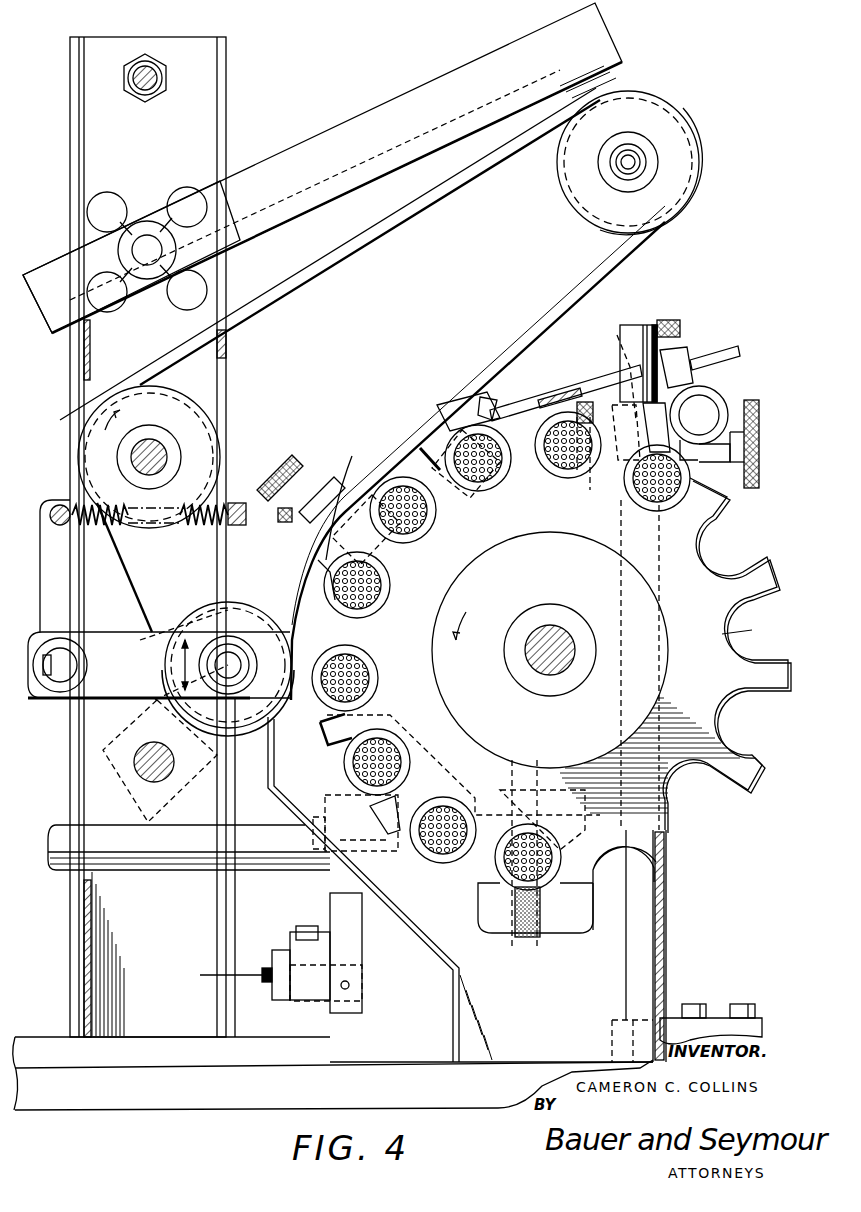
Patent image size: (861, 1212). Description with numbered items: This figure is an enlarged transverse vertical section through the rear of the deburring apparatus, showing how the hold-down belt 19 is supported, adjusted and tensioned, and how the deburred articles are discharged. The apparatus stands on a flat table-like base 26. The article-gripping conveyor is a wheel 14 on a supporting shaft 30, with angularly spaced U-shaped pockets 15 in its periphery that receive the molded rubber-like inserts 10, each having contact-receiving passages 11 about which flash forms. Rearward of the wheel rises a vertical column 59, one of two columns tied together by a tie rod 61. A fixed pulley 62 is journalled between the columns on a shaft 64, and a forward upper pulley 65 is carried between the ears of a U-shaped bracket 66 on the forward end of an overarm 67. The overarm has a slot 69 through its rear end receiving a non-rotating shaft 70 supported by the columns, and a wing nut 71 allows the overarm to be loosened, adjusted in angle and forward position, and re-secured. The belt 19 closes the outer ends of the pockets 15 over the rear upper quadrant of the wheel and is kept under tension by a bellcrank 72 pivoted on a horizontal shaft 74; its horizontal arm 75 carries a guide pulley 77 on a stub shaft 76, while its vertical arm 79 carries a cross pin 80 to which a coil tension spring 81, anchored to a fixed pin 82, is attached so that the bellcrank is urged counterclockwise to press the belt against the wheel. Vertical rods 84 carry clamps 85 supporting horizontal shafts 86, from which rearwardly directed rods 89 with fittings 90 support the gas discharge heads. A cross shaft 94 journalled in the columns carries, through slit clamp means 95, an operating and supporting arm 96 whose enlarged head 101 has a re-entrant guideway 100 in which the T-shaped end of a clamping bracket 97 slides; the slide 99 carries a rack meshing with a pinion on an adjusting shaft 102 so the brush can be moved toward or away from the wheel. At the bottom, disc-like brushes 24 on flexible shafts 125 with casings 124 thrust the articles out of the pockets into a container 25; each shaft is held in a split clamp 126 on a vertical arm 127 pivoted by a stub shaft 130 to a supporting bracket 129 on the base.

The insert 10 is at (494, 410).
The contact-receiving passages 11 is at (372, 678).
The wheel 14 is at (752, 790).
The notches or pockets 15 is at (730, 632).
The hold-down belt 19 is at (558, 320).
The disc-like brushes 24 is at (540, 920).
The container 25 is at (643, 968).
The base 26 is at (480, 1062).
The shaft 30 is at (556, 635).
The vertical column 59 is at (212, 102).
The tie rod 61 is at (140, 68).
The fixed pulley 62 is at (190, 412).
The shaft 64 is at (170, 450).
The forward upper hold-down belt pulley 65 is at (690, 118).
The U-shaped bracket 66 is at (620, 76).
The overarm 67 is at (410, 100).
The slot 69 is at (80, 268).
The shaft 70 is at (148, 245).
The wing nut 71 is at (142, 230).
The bellcrank 72 is at (54, 721).
The horizontal shaft 74 is at (50, 672).
The horizontal arm 75 is at (165, 640).
The stub shaft 76 is at (232, 655).
The guide pulley 77 is at (208, 612).
The vertical arm 79 is at (44, 566).
The cross pin 80 is at (60, 505).
The coil tension spring 81 is at (190, 525).
The fixed pin 82 is at (238, 502).
The rods 84 is at (668, 905).
The clamp 85 is at (680, 345).
The horizontal shaft 86 is at (720, 355).
The rods 89 is at (568, 396).
The fittings 90 is at (438, 404).
The cross shaft 94 is at (134, 765).
The slit clamp means 95 is at (132, 738).
The operating and supporting arm 96 is at (312, 568).
The clamping bracket 97 is at (388, 452).
The slide 99 is at (335, 478).
The re-entrant guideway 100 is at (280, 522).
The enlarged head 101 is at (312, 500).
The adjusting shaft 102 is at (290, 452).
The flexible casings 124 is at (165, 862).
The flexible shafts 125 is at (560, 840).
The split clamp 126 is at (324, 792).
The vertical arm 127 is at (360, 955).
The supporting brackets 129 is at (300, 948).
The stub shafts 130 is at (222, 975).